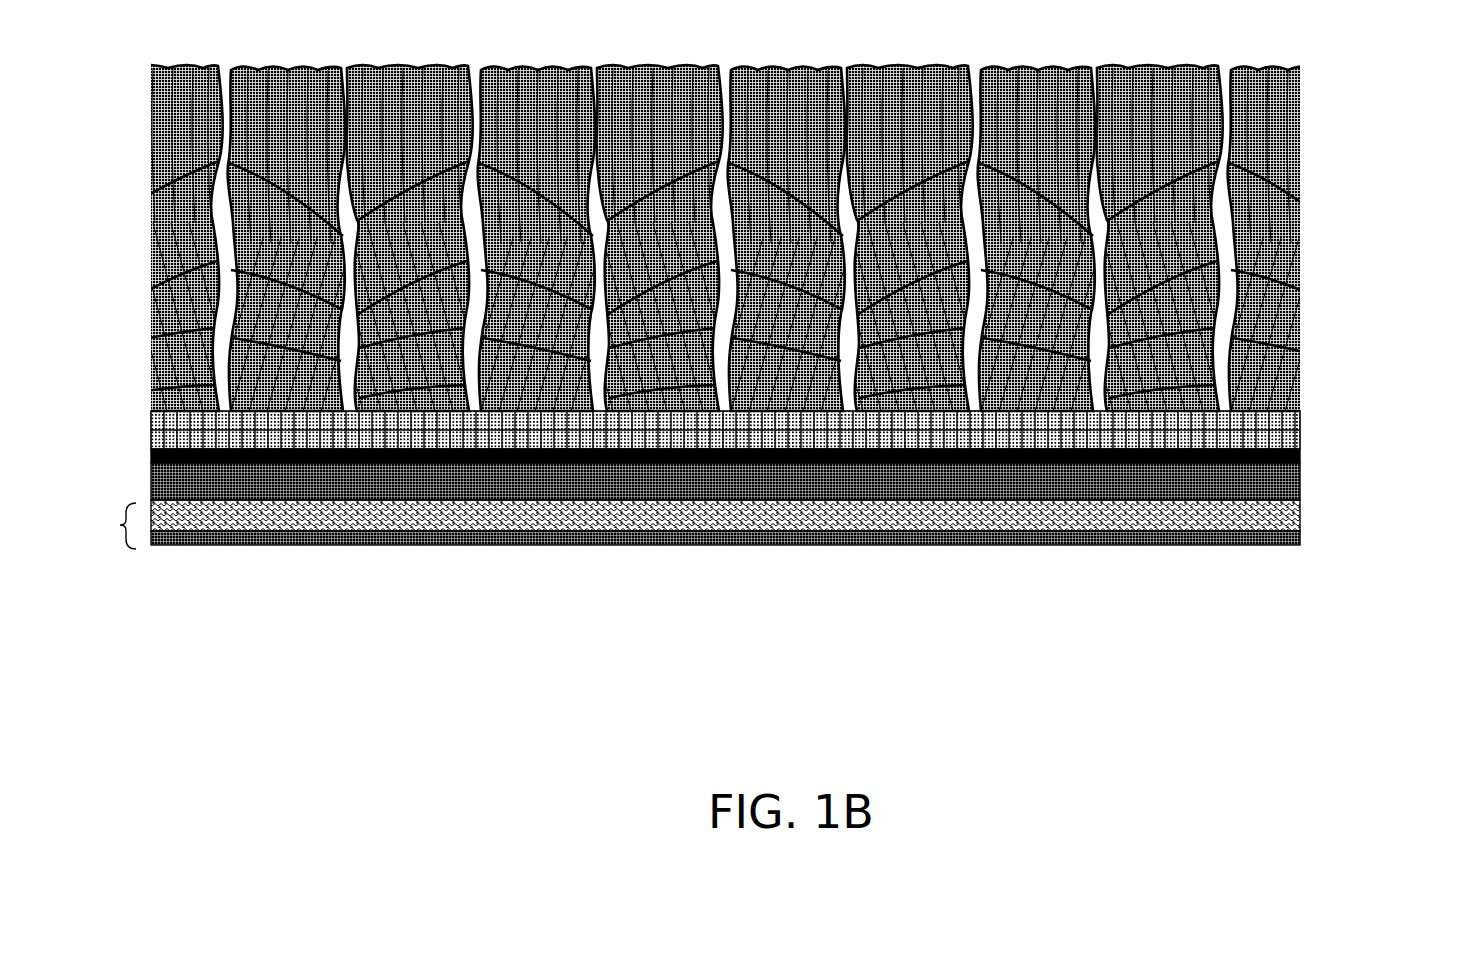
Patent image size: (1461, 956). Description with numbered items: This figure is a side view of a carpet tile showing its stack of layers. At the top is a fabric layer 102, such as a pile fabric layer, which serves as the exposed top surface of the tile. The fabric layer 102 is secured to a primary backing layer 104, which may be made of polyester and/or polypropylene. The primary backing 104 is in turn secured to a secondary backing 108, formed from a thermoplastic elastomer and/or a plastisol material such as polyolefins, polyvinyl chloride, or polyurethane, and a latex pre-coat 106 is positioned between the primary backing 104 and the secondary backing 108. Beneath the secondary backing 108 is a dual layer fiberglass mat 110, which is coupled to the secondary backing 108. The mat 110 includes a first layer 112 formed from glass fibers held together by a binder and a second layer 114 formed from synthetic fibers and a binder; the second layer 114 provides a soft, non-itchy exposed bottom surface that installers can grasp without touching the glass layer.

The fabric layer 102 is at (1292, 203).
The primary backing layer 104 is at (1292, 407).
The latex pre-coat 106 is at (1292, 446).
The secondary backing 108 is at (1292, 475).
The dual layer fiberglass mat 110 is at (112, 517).
The first layer 112 is at (1292, 518).
The second layer 114 is at (1292, 537).